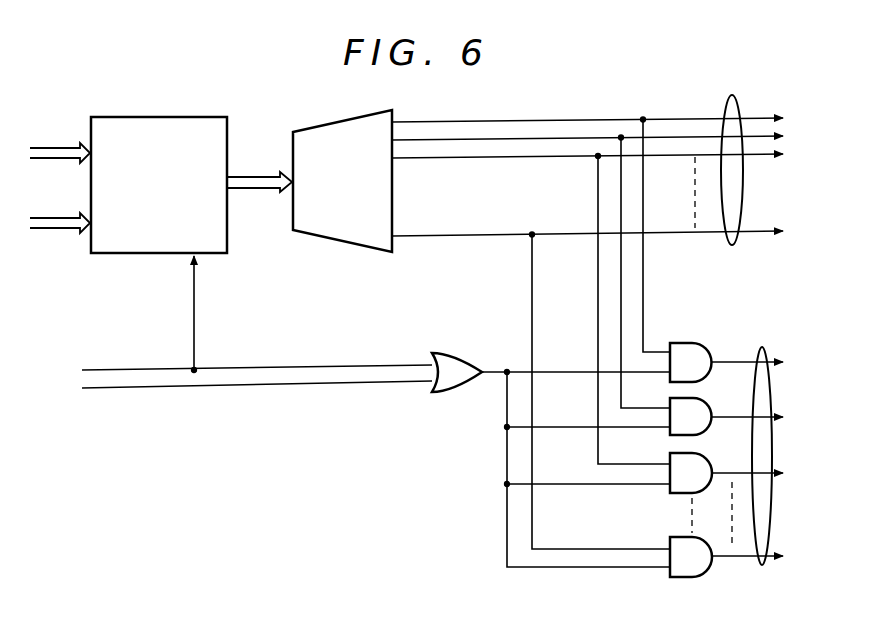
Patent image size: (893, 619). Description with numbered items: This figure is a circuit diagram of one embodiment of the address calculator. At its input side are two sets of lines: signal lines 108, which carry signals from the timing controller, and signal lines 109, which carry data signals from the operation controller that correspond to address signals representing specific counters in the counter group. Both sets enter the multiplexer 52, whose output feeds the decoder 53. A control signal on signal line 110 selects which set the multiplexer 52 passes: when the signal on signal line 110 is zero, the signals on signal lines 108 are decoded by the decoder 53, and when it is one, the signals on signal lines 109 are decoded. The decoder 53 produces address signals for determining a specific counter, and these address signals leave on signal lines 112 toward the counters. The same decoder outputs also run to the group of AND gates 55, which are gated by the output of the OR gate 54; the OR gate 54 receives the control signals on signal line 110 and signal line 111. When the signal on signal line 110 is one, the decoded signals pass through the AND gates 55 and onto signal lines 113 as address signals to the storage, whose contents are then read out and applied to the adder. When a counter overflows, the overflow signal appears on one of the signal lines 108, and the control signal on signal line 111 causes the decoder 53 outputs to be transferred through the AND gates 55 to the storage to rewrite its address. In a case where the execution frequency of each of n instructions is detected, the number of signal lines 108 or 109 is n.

The multiplexer 52 is at (197, 118).
The decoder 53 is at (333, 130).
The OR gate 54 is at (458, 367).
The group of AND gates 55 is at (686, 349).
The signal lines 108 is at (59, 150).
The signal lines 109 is at (61, 229).
The signal line 110 is at (128, 368).
The signal line 111 is at (150, 388).
The signal lines 112 is at (736, 108).
The signal lines 113 is at (764, 352).